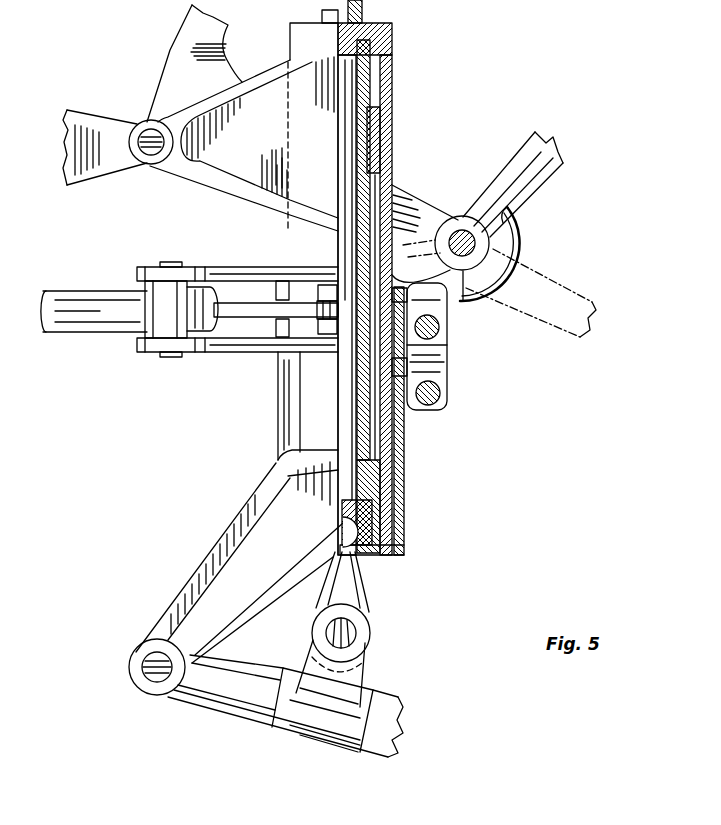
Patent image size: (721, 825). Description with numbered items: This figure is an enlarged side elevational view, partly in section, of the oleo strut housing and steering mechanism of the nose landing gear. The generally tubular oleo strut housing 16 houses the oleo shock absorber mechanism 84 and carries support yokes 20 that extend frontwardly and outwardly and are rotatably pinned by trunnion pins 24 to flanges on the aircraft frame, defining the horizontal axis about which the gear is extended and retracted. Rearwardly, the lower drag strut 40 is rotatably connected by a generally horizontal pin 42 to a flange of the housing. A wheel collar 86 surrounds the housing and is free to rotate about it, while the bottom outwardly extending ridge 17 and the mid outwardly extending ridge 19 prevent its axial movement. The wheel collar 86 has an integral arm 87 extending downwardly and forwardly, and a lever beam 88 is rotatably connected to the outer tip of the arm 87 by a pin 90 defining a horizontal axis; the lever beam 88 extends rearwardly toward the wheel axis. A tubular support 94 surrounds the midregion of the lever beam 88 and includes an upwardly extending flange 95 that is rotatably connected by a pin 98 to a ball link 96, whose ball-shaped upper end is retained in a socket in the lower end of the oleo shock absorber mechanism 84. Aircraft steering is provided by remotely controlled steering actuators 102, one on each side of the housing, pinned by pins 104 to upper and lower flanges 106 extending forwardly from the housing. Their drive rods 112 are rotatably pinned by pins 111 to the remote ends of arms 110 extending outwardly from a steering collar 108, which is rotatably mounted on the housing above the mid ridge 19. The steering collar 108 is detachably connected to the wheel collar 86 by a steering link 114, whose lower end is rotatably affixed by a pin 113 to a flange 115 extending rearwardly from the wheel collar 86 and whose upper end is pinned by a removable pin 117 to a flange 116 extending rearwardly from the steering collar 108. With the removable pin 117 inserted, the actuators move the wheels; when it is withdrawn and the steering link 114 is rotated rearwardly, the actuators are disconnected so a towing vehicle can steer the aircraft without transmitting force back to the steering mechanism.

The oleo strut housing 16 is at (393, 75).
The bottom outwardly extending ridge 17 is at (406, 548).
The mid outwardly extending ridge 19 is at (442, 347).
The support yokes 20 is at (214, 192).
The trunnion pins 24 is at (150, 120).
The lower drag strut 40 is at (503, 172).
The pin 42 is at (500, 248).
The oleo shock absorber mechanism 84 is at (360, 413).
The wheel collar 86 is at (277, 410).
The arm 87 is at (170, 592).
The lever beam 88 is at (216, 718).
The pin 90 is at (146, 666).
The tubular support 94 is at (338, 730).
The upwardly extending flange 95 is at (365, 682).
The ball link 96 is at (362, 590).
The pin 98 is at (370, 636).
The steering actuators 102 is at (72, 336).
The pins 104 is at (155, 267).
The flanges 106 is at (196, 266).
The steering collar 108 is at (252, 262).
The arms 110 is at (283, 282).
The pins 111 is at (330, 288).
The drive rods 112 is at (232, 305).
The pin 113 is at (448, 393).
The steering link 114 is at (448, 366).
The flange 115 is at (415, 406).
The flange 116 is at (440, 312).
The removable pin 117 is at (440, 330).